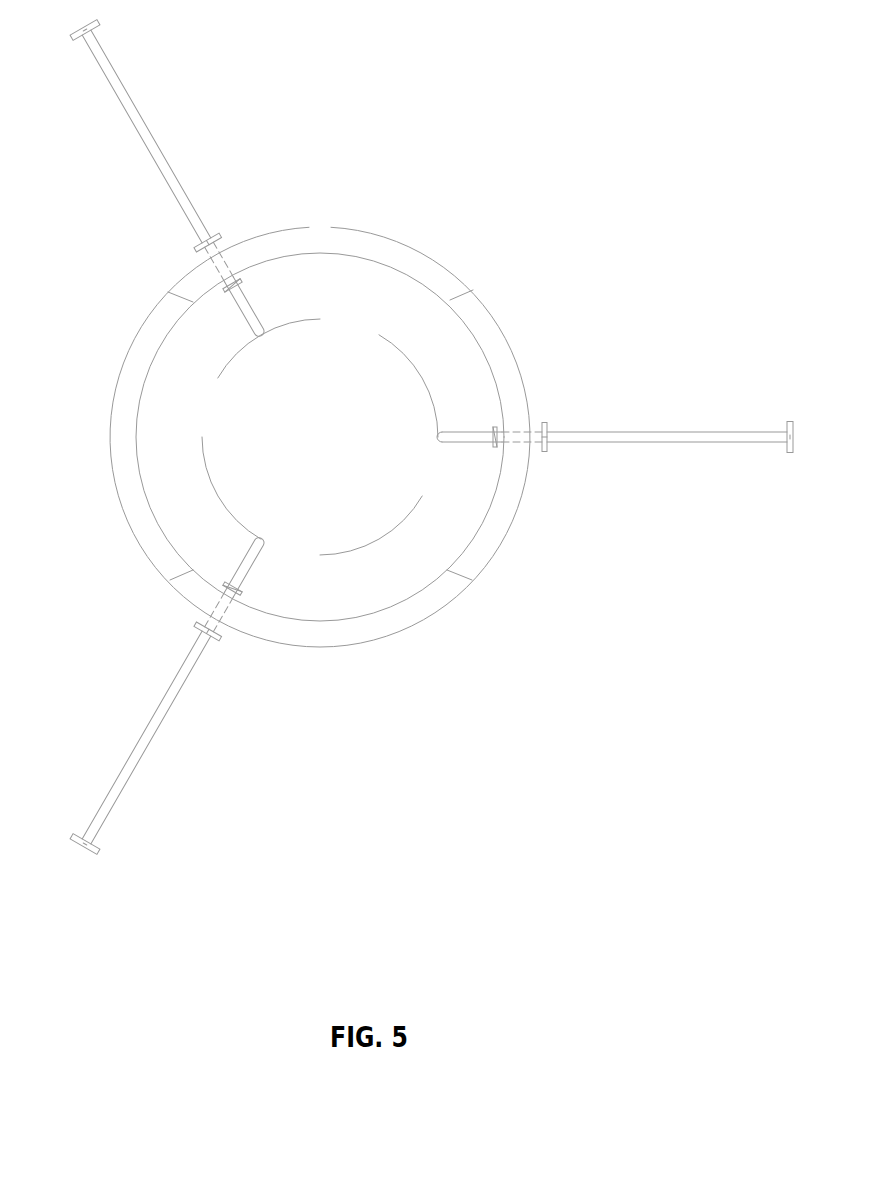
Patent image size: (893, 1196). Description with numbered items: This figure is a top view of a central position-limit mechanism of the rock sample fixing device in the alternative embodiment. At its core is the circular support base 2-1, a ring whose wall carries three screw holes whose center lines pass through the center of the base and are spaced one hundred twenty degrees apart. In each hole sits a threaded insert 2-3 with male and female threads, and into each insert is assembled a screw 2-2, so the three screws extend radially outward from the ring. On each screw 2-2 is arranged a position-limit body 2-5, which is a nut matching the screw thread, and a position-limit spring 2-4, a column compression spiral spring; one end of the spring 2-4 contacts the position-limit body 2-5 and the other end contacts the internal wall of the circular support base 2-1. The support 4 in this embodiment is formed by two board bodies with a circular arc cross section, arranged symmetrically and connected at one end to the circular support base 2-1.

The circular support base 2-1 is at (122, 398).
The screw 2-2 is at (610, 436).
The threaded insert 2-3 is at (547, 422).
The position-limit spring 2-4 is at (497, 445).
The position-limit body 2-5 is at (493, 445).
The support 4 is at (405, 262).